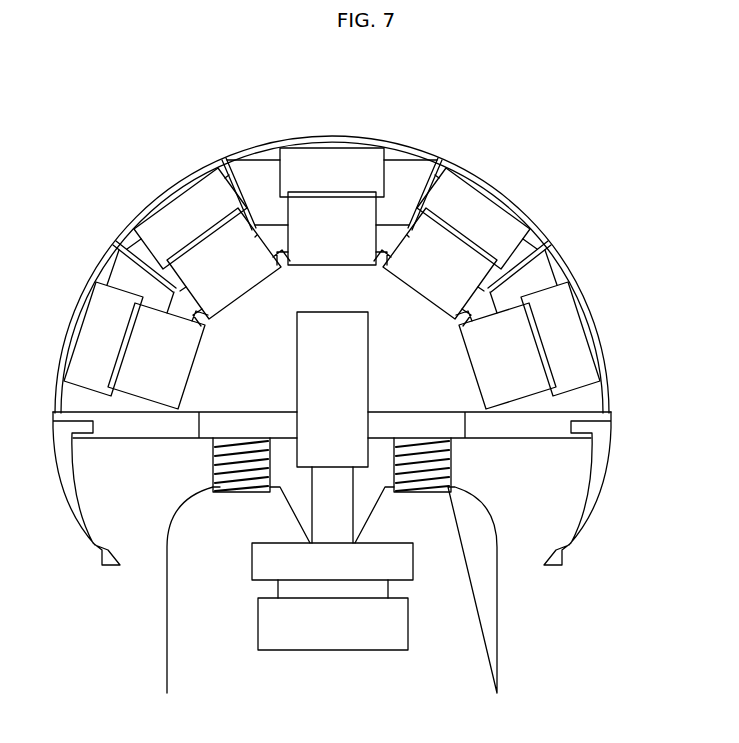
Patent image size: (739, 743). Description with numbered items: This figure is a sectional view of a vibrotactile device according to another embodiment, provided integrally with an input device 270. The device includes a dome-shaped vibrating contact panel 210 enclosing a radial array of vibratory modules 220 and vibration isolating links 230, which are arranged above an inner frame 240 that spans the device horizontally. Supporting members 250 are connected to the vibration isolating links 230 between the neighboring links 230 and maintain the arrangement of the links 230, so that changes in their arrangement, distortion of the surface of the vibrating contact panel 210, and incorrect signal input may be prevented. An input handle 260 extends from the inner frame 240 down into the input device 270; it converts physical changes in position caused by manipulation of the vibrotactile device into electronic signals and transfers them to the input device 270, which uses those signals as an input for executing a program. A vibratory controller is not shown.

The vibrating contact panel 210 is at (552, 267).
The vibratory module 220 is at (567, 327).
The vibration isolating link 230 is at (520, 367).
The inner frame 240 is at (442, 390).
The supporting member 250 is at (390, 237).
The input handle 260 is at (347, 450).
The input device 270 is at (462, 653).